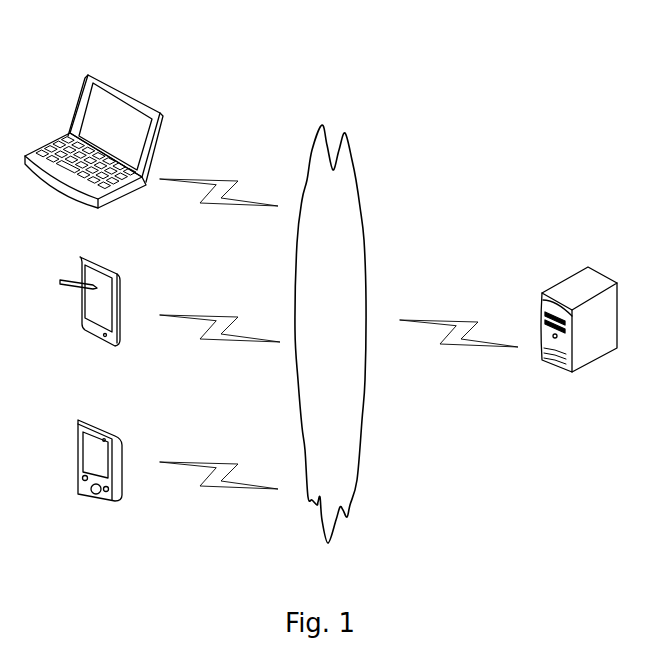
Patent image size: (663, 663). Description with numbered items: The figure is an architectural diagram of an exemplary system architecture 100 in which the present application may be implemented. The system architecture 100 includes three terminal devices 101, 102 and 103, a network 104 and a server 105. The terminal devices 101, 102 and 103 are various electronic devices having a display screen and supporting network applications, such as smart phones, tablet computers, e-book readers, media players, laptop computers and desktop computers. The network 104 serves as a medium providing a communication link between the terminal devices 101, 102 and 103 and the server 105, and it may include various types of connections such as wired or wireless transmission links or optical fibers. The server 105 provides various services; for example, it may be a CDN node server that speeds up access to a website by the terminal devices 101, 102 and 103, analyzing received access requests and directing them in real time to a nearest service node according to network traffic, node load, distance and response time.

The system architecture 100 is at (508, 48).
The terminal device 101 is at (100, 477).
The terminal device 102 is at (90, 318).
The terminal device 103 is at (94, 156).
The network 104 is at (330, 334).
The server 105 is at (579, 333).